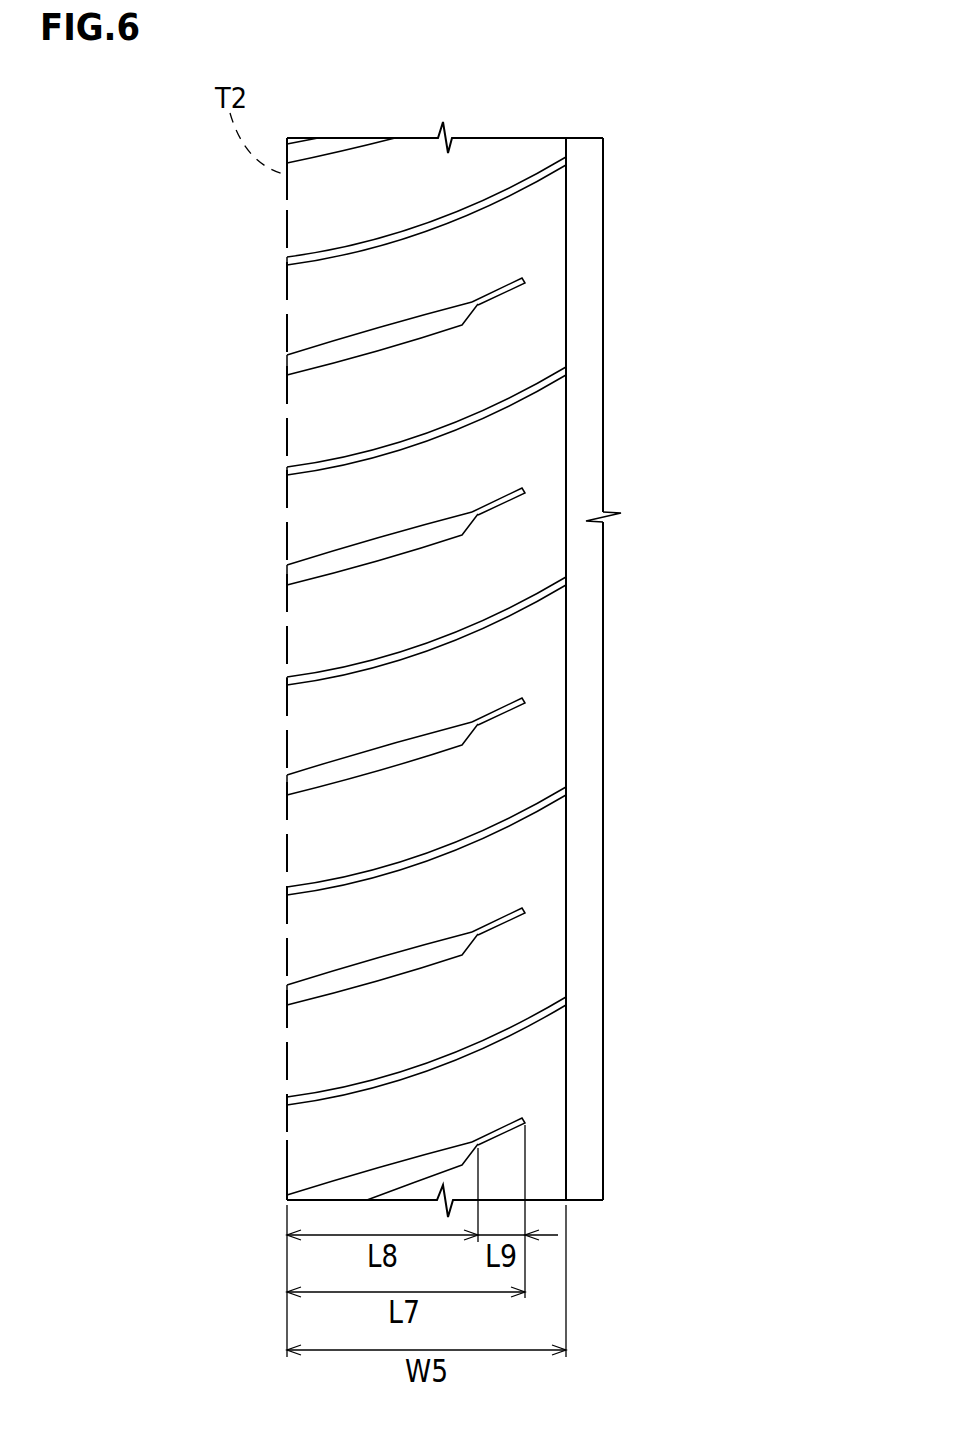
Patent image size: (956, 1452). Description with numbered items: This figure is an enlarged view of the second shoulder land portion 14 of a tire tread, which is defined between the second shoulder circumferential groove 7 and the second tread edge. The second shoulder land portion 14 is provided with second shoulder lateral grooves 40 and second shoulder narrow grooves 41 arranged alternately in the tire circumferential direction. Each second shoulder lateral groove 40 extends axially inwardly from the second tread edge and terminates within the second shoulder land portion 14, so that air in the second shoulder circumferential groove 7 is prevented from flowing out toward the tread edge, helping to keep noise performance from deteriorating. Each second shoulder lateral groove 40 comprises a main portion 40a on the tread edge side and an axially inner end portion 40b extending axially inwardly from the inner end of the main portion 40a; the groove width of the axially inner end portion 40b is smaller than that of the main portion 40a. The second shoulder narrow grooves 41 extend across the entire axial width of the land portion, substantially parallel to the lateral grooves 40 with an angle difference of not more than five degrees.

The second shoulder circumferential groove 7 is at (587, 173).
The second shoulder land portion 14 is at (415, 173).
The second shoulder lateral groove 40 is at (419, 733).
The main portion 40a is at (397, 342).
The axially inner end portion 40b is at (502, 295).
The second shoulder narrow groove 41 is at (500, 405).